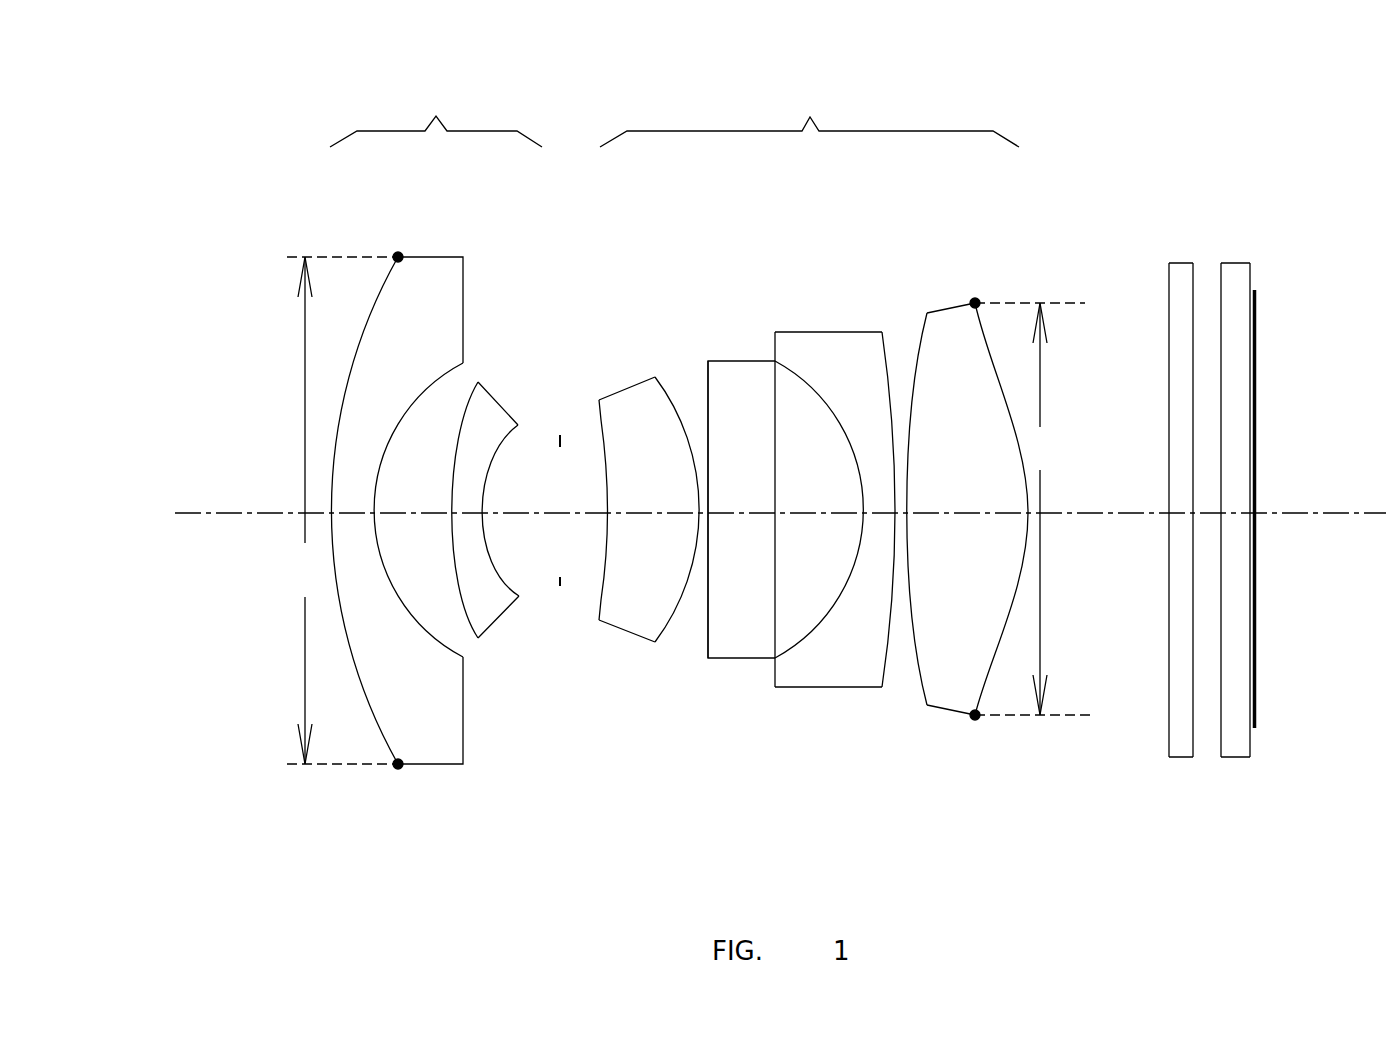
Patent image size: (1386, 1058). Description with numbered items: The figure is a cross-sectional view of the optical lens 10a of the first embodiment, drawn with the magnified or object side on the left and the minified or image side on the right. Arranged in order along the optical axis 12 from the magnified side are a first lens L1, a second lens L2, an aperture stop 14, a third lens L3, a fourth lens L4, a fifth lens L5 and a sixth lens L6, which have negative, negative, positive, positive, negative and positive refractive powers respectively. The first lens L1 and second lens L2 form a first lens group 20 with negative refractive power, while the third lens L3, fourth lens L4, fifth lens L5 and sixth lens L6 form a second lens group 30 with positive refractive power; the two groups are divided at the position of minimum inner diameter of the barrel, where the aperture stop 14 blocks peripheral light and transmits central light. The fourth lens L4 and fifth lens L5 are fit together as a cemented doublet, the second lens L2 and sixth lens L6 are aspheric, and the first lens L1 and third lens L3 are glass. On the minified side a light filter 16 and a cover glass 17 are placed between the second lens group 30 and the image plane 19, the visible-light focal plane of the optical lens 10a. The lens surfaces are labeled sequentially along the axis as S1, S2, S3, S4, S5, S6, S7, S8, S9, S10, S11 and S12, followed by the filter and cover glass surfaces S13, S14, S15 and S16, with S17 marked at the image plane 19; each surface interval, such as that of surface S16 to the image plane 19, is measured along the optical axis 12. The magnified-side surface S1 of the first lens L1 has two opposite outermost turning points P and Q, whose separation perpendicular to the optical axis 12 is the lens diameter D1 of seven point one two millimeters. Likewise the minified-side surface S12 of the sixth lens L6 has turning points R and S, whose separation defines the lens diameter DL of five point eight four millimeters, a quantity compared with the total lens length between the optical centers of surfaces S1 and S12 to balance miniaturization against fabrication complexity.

The optical lens 10a is at (218, 67).
The optical axis 12 is at (235, 510).
The aperture stop 14 is at (560, 440).
The light filter 16 is at (1164, 516).
The cover glass 17 is at (1276, 510).
The image plane 19 is at (1317, 504).
The first lens group 20 is at (439, 467).
The second lens group 30 is at (800, 452).
The first lens L1 is at (397, 528).
The second lens L2 is at (500, 541).
The third lens L3 is at (629, 529).
The fourth lens L4 is at (759, 521).
The fifth lens L5 is at (847, 513).
The sixth lens L6 is at (975, 509).
The surface S1 is at (375, 735).
The surface S2 is at (443, 652).
The surface S3 is at (468, 640).
The image-side surface of second lens S4 is at (512, 585).
The object-side surface of third lens S5 is at (560, 580).
The image-side surface of third lens S6 is at (600, 600).
The object-side surface of fourth lens S7 is at (675, 618).
The image-side surface of fourth lens S8 is at (700, 645).
The object-side surface of fifth lens S9 is at (780, 660).
The image-side surface of fifth lens S10 is at (883, 672).
The object-side surface of sixth lens S11 is at (922, 680).
The surface S12 is at (988, 700).
The object-side surface of first filter S13 is at (1169, 710).
The image-side surface of first filter S14 is at (1195, 745).
The object-side surface of second filter S15 is at (1221, 735).
The surface S16 is at (1252, 740).
The image plane surface S17 is at (1256, 695).
The turning point P is at (397, 275).
The turning point Q is at (399, 746).
The turning point R is at (972, 288).
The turning point S is at (968, 698).
The lens diameter D1 is at (341, 510).
The lens diameter DL is at (1032, 509).